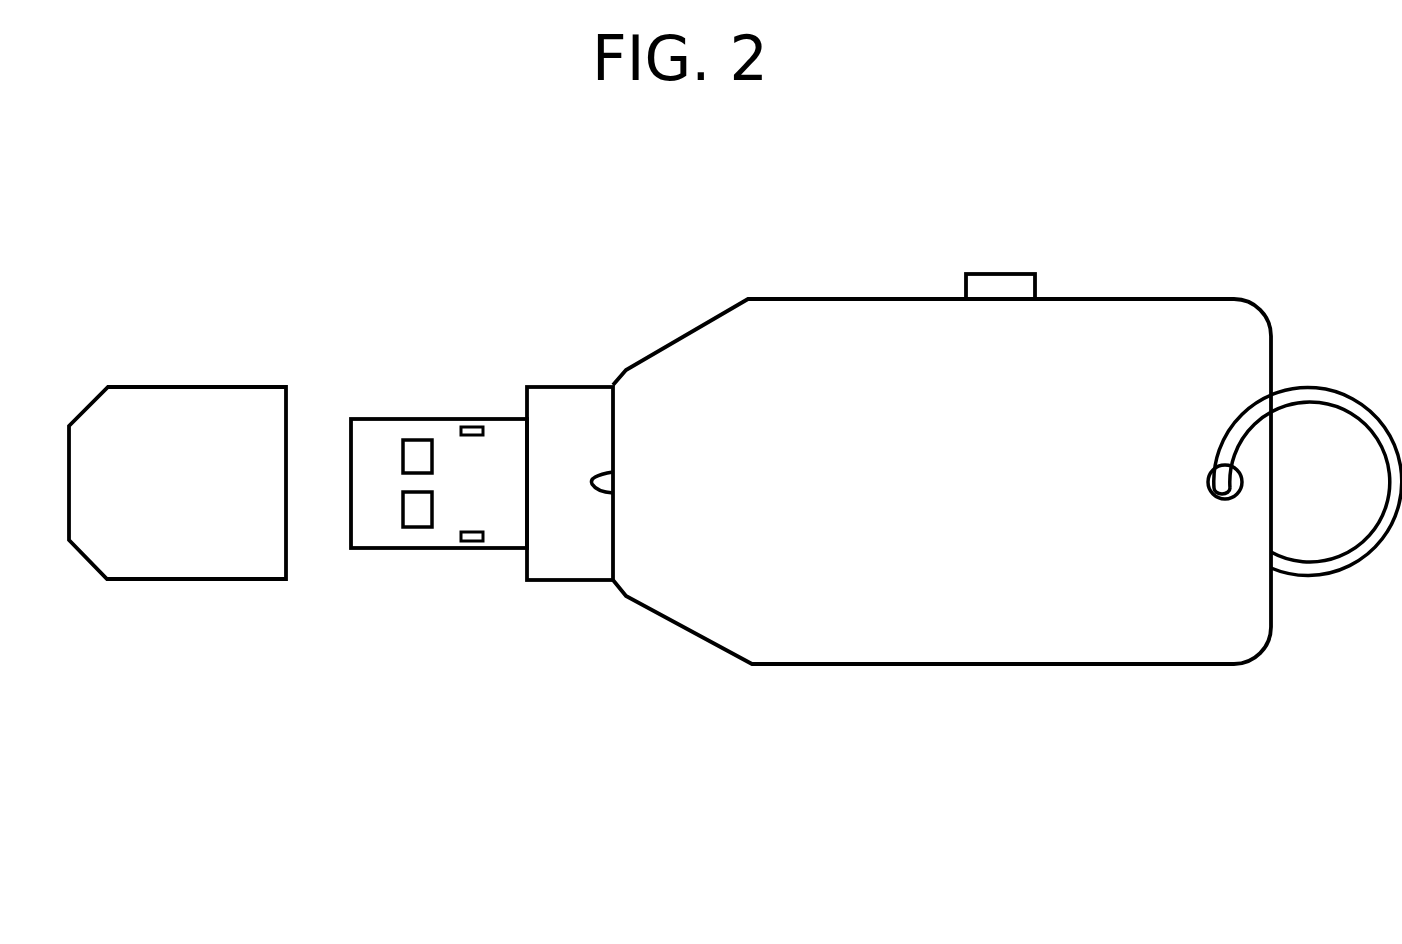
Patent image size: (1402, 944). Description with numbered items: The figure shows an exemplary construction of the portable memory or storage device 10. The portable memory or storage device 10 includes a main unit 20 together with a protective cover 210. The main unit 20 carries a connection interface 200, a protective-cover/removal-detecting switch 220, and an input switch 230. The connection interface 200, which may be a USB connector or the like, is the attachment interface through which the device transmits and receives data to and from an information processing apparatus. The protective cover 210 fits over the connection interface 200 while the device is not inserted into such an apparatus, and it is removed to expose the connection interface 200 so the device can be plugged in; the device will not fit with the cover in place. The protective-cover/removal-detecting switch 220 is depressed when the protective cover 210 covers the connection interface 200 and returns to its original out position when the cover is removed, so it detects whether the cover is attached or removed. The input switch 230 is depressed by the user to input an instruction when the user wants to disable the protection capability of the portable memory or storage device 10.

The portable memory or storage device 10 is at (536, 271).
The main unit 20 is at (1300, 738).
The connection interface 200 is at (445, 419).
The protective cover 210 is at (203, 387).
The protective-cover/removal-detecting switch 220 is at (598, 487).
The input switch 230 is at (1037, 283).